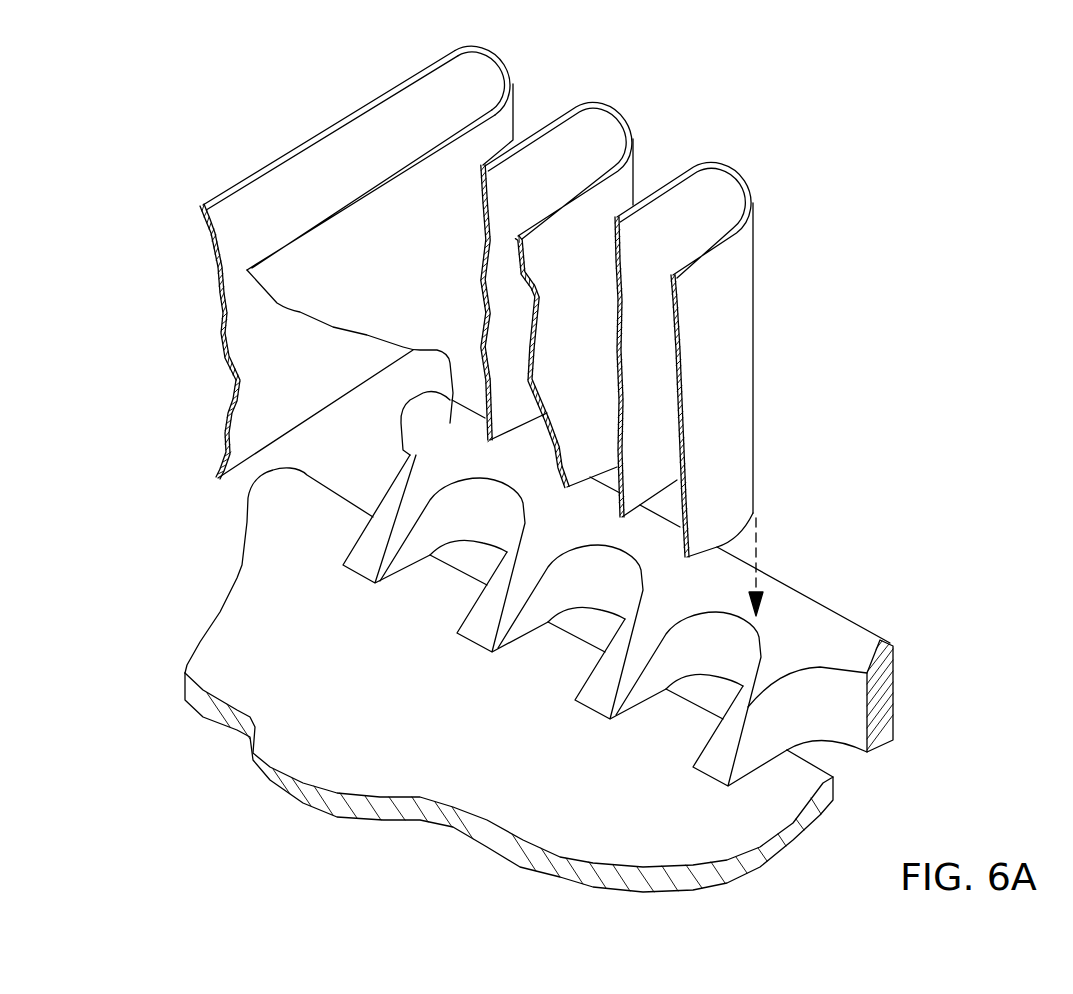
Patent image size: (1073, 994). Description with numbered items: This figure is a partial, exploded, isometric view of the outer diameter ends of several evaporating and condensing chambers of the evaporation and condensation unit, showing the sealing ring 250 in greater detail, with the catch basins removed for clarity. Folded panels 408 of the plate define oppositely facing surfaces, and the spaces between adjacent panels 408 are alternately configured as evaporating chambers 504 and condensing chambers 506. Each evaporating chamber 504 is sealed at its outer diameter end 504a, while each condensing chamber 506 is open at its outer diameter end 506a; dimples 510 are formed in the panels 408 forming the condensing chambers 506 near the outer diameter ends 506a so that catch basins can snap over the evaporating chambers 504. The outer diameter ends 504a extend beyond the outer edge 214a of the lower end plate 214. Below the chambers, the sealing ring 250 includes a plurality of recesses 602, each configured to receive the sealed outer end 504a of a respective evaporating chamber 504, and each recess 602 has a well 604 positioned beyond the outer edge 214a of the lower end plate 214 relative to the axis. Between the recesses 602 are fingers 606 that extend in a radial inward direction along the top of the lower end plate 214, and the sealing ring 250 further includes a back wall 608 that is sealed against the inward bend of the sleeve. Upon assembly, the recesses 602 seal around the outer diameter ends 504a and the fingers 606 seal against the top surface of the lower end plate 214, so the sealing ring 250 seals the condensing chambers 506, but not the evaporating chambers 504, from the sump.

The lower end plate 214 is at (556, 795).
The outer edge of lower end plate 214a is at (823, 765).
The sealing ring 250 is at (776, 577).
The panel 408 is at (379, 262).
The evaporating chamber 504 is at (353, 181).
The outer diameter end of evaporating chamber 504a is at (494, 72).
The condensing chamber 506 is at (423, 233).
The outer diameter end of condensing chamber 506a is at (543, 102).
The dimple 510 is at (534, 315).
The recess 602 is at (523, 617).
The well 604 is at (753, 637).
The finger 606 is at (357, 577).
The back wall 608 is at (890, 640).